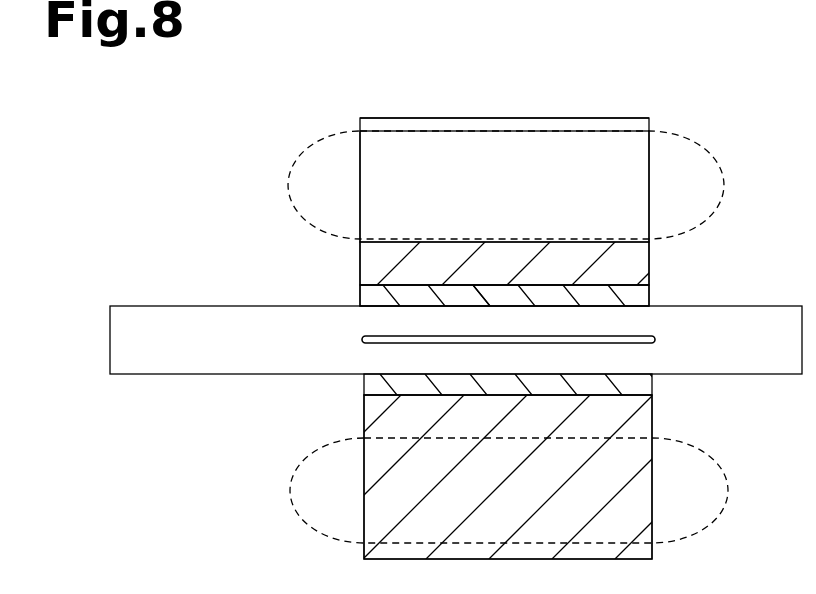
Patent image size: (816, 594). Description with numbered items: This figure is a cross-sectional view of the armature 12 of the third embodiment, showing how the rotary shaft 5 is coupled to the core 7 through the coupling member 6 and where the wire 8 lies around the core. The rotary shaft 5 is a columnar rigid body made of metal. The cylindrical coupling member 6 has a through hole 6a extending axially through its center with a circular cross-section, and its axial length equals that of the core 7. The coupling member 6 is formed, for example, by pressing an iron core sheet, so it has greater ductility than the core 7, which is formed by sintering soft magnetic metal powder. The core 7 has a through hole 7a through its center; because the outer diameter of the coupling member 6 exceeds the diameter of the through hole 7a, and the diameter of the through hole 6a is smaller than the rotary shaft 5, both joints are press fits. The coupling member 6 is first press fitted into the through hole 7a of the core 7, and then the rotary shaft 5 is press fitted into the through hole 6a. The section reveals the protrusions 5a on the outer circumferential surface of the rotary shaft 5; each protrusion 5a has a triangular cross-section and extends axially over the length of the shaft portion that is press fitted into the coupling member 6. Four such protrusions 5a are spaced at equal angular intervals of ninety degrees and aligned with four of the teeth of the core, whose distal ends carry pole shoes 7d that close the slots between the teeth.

The armature 12 is at (178, 160).
The rotary shaft 5 is at (140, 306).
The protrusions 5a is at (362, 339).
The coupling member 6 is at (360, 297).
The through hole 6a is at (468, 300).
The core 7 is at (360, 265).
The through hole 7a is at (650, 291).
The pole shoe 7d is at (650, 121).
The wire 8 is at (293, 131).